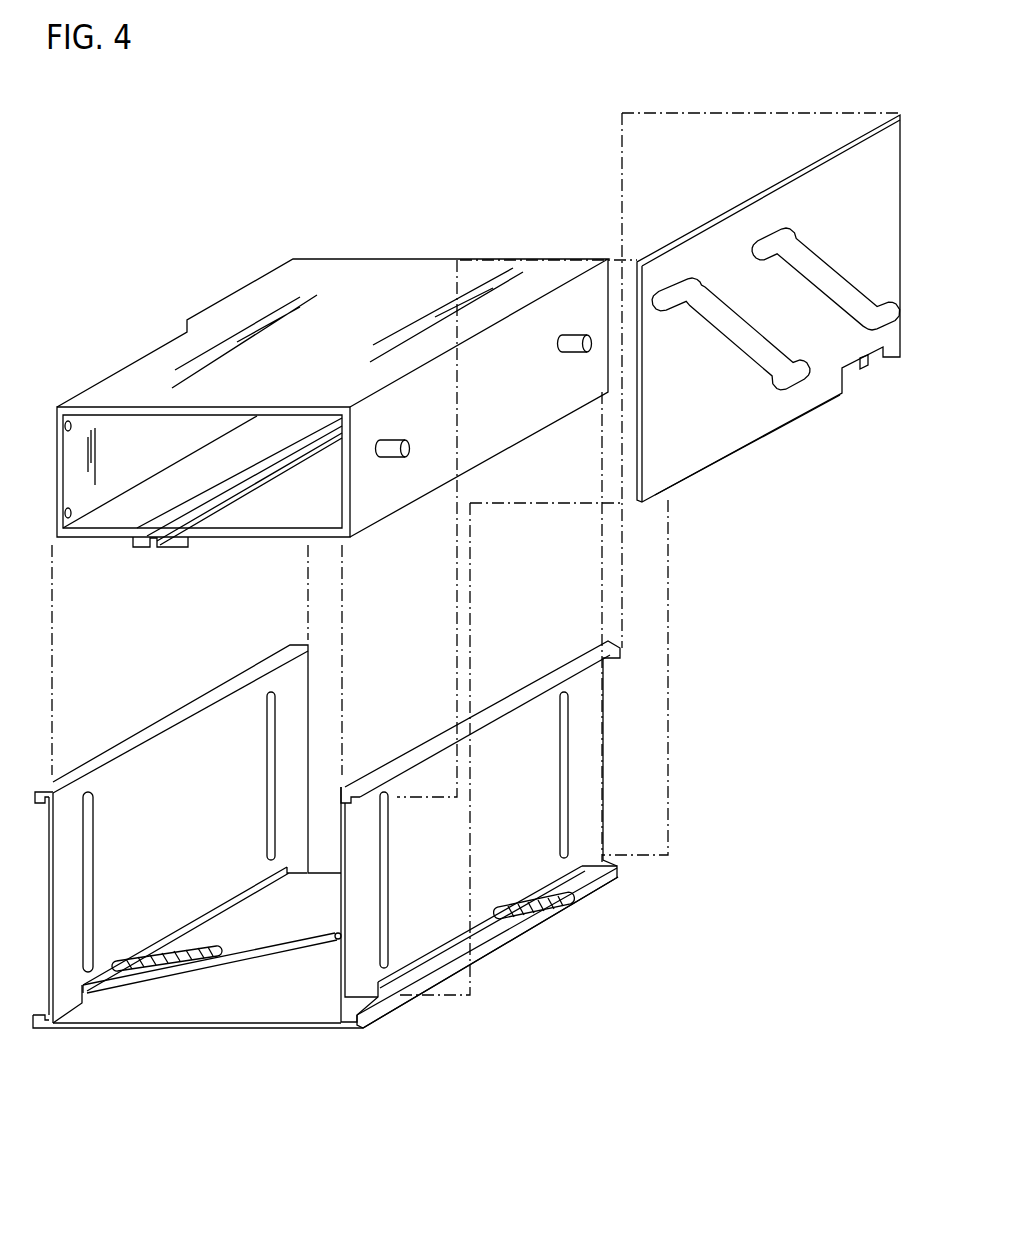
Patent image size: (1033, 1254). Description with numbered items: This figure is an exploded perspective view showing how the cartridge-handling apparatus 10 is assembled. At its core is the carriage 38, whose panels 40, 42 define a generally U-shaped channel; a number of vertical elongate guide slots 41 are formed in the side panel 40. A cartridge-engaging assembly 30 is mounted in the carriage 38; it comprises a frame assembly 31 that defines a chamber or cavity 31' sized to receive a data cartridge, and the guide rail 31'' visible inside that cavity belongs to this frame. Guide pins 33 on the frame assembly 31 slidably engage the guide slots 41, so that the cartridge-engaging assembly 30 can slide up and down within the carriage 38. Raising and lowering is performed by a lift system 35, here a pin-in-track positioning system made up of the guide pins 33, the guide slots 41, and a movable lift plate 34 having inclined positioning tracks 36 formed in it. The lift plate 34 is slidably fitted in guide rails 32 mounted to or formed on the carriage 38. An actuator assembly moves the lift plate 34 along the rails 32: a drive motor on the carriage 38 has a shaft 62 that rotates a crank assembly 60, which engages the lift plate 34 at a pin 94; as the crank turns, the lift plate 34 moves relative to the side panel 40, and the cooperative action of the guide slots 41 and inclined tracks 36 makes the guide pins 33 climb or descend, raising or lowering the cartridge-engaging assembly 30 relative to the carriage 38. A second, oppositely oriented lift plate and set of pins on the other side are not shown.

The cartridge-handling apparatus 10 is at (483, 211).
The cartridge-engaging assembly 30 is at (332, 390).
The frame assembly 31 is at (332, 370).
The chamber or cavity 31' is at (239, 502).
The housing floor 31'' is at (160, 499).
The guide pins 33 is at (400, 440).
The lift plate 34 is at (687, 474).
The lift system 35 is at (768, 326).
The inclined positioning tracks 36 is at (795, 264).
The pin 94 is at (861, 372).
The carriage 38 is at (389, 862).
The side panel 40 is at (549, 757).
The guide slots 41 is at (387, 868).
The panel 42 is at (305, 1000).
The guide rails 32 is at (509, 929).
The crank assembly 60 is at (256, 953).
The shaft 62 is at (334, 934).